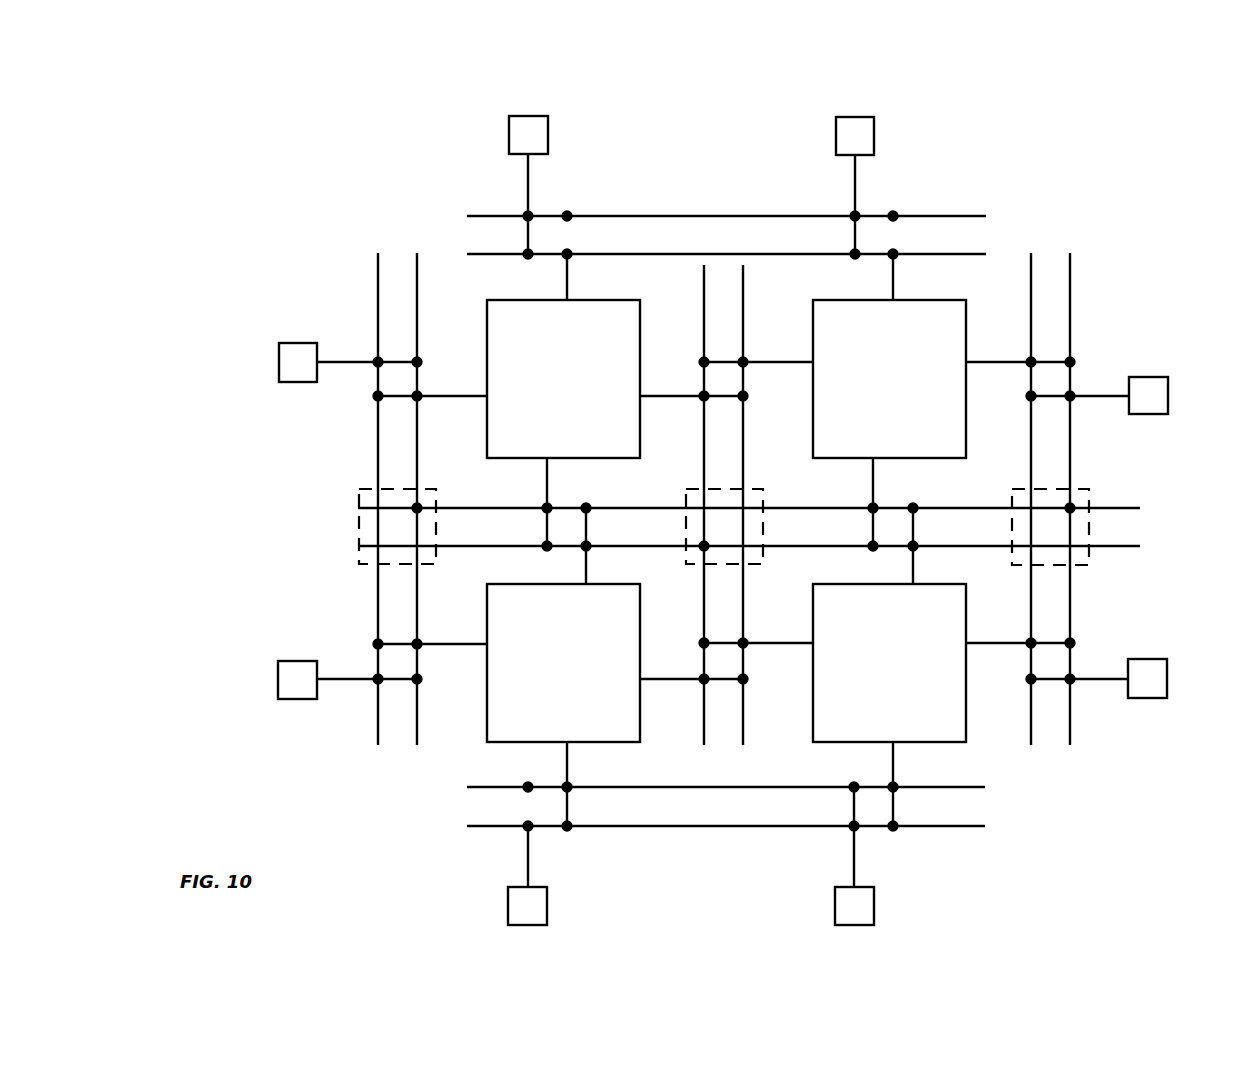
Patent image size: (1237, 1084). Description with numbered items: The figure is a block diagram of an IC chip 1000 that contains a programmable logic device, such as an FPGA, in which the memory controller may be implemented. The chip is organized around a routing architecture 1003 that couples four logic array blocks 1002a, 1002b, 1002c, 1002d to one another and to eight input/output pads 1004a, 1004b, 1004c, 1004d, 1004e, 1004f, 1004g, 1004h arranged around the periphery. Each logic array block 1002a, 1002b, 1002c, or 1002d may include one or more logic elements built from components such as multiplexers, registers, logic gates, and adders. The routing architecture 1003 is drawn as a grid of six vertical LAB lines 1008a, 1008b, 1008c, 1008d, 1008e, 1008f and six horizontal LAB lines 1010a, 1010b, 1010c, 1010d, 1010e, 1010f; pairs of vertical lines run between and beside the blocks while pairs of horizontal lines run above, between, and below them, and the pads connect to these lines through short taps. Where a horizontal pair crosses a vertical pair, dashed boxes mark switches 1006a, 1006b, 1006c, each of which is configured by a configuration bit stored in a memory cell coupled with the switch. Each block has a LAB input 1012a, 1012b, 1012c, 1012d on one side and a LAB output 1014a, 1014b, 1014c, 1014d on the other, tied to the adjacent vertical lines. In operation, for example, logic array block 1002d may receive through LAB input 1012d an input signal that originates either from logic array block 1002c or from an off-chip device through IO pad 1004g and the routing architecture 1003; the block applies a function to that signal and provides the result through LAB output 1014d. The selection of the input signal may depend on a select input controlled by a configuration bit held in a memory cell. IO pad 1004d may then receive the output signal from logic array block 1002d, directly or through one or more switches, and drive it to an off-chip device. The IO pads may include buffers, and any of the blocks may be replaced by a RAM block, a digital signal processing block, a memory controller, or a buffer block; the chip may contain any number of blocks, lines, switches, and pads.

The IC chip 1000 is at (1094, 171).
The routing architecture 1003 is at (340, 600).
The logic array block 1002a is at (563, 402).
The logic array block 1002b is at (889, 402).
The logic array block 1002c is at (563, 667).
The logic array block 1002d is at (889, 667).
The input/output pad 1004a is at (545, 115).
The input/output pad 1004b is at (870, 116).
The input/output pad 1004c is at (1155, 377).
The input/output pad 1004d is at (1153, 659).
The input/output pad 1004e is at (870, 887).
The input/output pad 1004f is at (543, 887).
The input/output pad 1004g is at (299, 661).
The input/output pad 1004h is at (298, 343).
The switch 1006a is at (432, 489).
The switch 1006b is at (759, 489).
The switch 1006c is at (1085, 489).
The vertical LAB line 1008a is at (378, 277).
The vertical LAB line 1008b is at (417, 277).
The vertical LAB line 1008c is at (704, 283).
The vertical LAB line 1008d is at (743, 283).
The vertical LAB line 1008e is at (1031, 288).
The vertical LAB line 1008f is at (1070, 288).
The horizontal LAB line 1010a is at (641, 216).
The horizontal LAB line 1010b is at (641, 254).
The horizontal LAB line 1010c is at (922, 508).
The horizontal LAB line 1010d is at (922, 546).
The horizontal LAB line 1010e is at (958, 787).
The horizontal LAB line 1010f is at (958, 826).
The LAB input 1012a is at (446, 402).
The LAB input 1012b is at (775, 367).
The LAB input 1012c is at (447, 649).
The LAB input 1012d is at (778, 648).
The LAB output 1014a is at (680, 402).
The LAB output 1014b is at (1001, 367).
The LAB output 1014c is at (672, 684).
The LAB output 1014d is at (1002, 648).